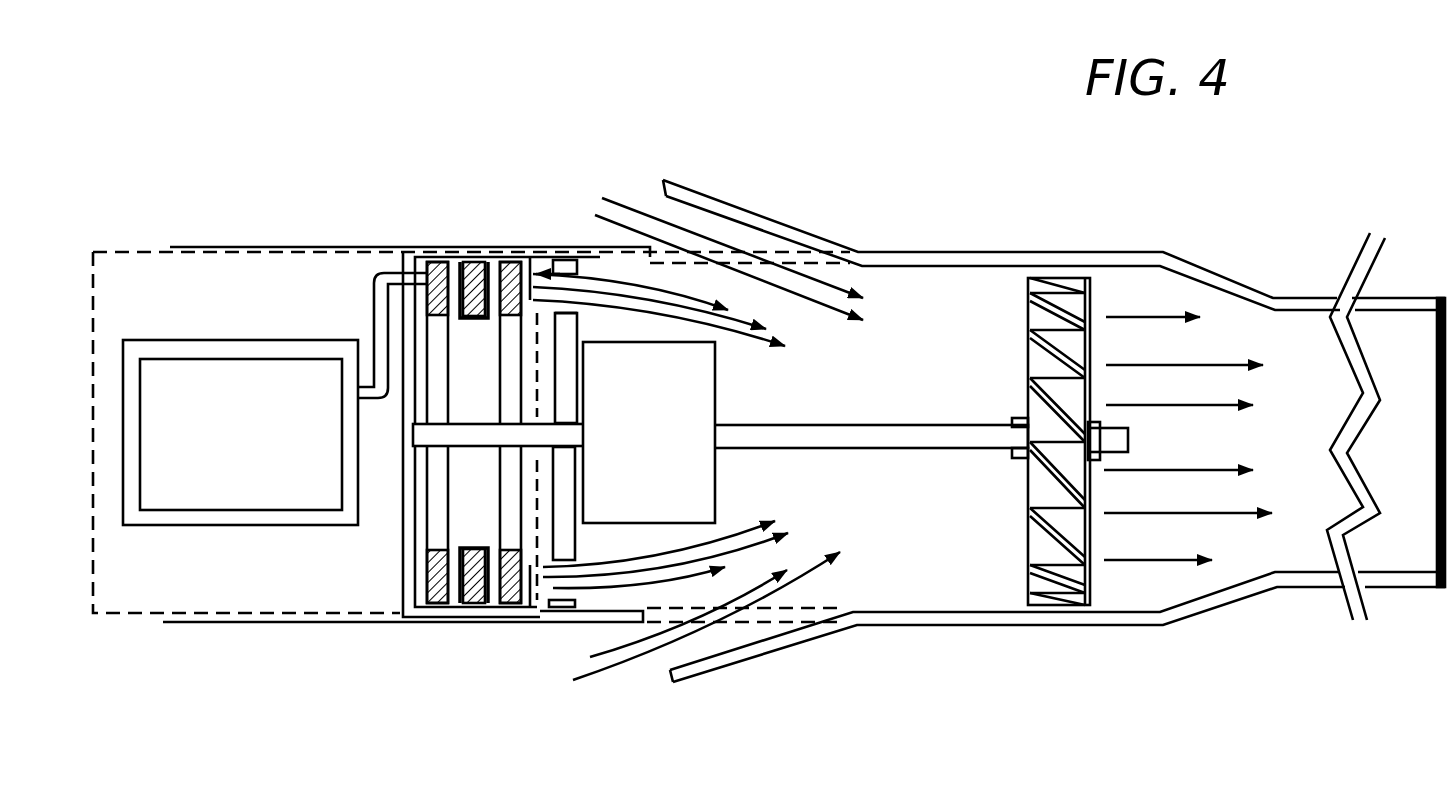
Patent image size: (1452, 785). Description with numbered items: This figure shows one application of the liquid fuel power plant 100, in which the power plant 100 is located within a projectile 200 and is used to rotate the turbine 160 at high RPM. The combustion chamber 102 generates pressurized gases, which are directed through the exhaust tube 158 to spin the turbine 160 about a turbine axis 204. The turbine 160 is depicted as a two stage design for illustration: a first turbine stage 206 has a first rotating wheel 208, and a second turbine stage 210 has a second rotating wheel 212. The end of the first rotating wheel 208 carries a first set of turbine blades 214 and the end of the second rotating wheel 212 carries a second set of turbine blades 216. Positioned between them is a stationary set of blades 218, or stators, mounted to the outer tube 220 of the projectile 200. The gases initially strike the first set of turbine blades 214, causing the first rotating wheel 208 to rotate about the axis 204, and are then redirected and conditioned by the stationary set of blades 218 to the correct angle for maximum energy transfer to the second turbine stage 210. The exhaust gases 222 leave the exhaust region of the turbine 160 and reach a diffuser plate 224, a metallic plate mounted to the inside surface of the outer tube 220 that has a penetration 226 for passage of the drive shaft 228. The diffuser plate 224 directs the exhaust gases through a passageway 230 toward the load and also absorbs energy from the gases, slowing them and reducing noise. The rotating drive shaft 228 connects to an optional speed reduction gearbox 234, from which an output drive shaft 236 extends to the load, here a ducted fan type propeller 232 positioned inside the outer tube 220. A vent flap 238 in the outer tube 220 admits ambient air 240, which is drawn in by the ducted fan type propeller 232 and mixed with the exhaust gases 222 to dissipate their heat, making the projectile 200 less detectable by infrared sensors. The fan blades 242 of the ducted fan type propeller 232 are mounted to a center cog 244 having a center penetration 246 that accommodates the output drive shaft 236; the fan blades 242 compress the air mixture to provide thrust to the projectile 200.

The liquid fuel power plant 100 is at (132, 248).
The combustion chamber 102 is at (186, 526).
The exhaust tube 158 is at (372, 297).
The turbine 160 is at (386, 517).
The projectile 200 is at (990, 250).
The turbine axis 204 is at (473, 423).
The first turbine stage 206 is at (434, 606).
The first rotating wheel 208 is at (415, 540).
The second turbine stage 210 is at (507, 604).
The second rotating wheel 212 is at (512, 535).
The first set of turbine blades 214 is at (433, 258).
The second set of turbine blades 216 is at (510, 258).
The stationary set of blades 218 is at (477, 258).
The outer tube 220 is at (398, 247).
The exhaust gases 222 is at (748, 338).
The diffuser plate 224 is at (575, 322).
The penetration 226 is at (576, 325).
The drive shaft 228 is at (572, 518).
The passageway 230 is at (546, 412).
The ducted fan type propeller 232 is at (1052, 607).
The speed reduction gearbox 234 is at (716, 455).
The output drive shaft 236 is at (873, 434).
The vent flap 238 is at (775, 222).
The ambient air 240 is at (855, 290).
The fan blades 242 is at (1028, 318).
The center cog 244 is at (1016, 418).
The center penetration 246 is at (1022, 458).